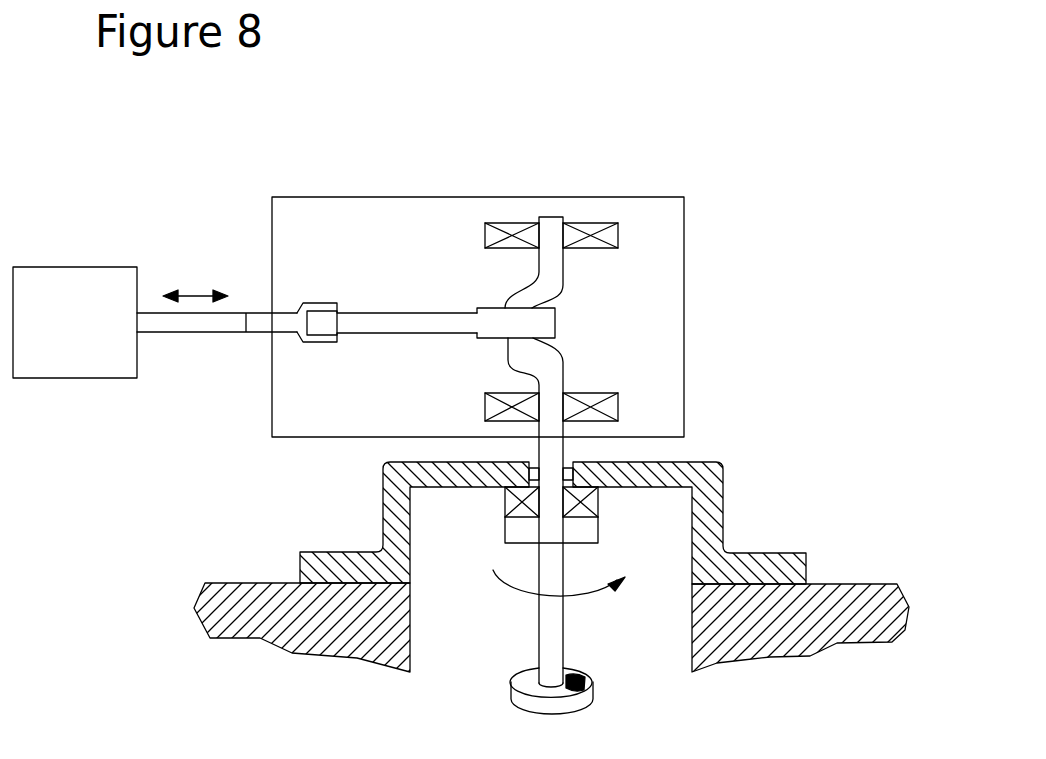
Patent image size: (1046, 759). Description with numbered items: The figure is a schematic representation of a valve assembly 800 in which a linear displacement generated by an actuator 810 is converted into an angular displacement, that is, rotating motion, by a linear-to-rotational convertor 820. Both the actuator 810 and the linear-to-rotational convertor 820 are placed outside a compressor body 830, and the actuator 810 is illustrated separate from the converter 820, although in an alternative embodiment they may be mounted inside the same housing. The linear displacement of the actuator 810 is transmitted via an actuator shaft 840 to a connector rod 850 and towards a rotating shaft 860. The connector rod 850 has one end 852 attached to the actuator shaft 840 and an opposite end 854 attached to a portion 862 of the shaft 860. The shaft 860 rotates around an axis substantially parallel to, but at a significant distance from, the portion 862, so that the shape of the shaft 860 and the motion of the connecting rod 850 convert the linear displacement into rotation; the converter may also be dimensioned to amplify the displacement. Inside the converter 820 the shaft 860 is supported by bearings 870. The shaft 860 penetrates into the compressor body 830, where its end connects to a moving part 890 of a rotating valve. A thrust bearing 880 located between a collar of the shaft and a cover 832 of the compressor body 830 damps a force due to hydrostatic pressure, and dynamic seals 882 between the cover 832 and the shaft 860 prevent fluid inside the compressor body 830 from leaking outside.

The valve assembly 800 is at (725, 167).
The actuator 810 is at (60, 300).
The actuator shaft 840 is at (185, 323).
The linear-to-rotational convertor 820 is at (684, 303).
The connector rod 850 is at (390, 325).
The end of connector rod 852 is at (325, 327).
The opposite end of connector rod 854 is at (488, 320).
The rotating shaft 860 is at (543, 288).
The bearings 870 is at (588, 230).
The portion of shaft 862 is at (507, 353).
The cover 832 is at (708, 512).
The compressor body 830 is at (835, 607).
The dynamic seals 882 is at (570, 473).
The thrust bearing 880 is at (507, 502).
The moving part of rotating valve 890 is at (527, 678).